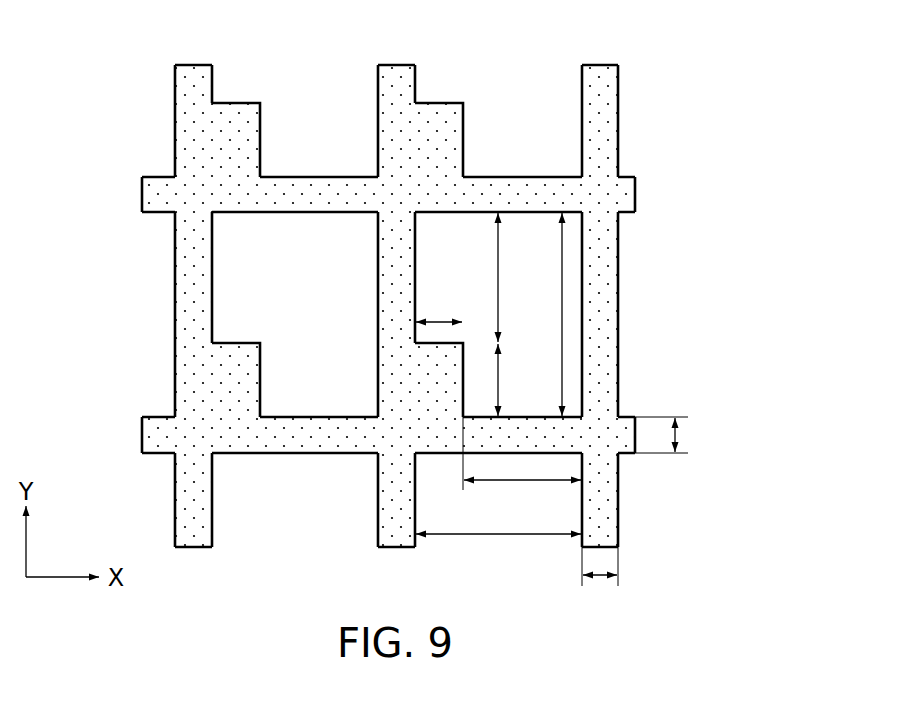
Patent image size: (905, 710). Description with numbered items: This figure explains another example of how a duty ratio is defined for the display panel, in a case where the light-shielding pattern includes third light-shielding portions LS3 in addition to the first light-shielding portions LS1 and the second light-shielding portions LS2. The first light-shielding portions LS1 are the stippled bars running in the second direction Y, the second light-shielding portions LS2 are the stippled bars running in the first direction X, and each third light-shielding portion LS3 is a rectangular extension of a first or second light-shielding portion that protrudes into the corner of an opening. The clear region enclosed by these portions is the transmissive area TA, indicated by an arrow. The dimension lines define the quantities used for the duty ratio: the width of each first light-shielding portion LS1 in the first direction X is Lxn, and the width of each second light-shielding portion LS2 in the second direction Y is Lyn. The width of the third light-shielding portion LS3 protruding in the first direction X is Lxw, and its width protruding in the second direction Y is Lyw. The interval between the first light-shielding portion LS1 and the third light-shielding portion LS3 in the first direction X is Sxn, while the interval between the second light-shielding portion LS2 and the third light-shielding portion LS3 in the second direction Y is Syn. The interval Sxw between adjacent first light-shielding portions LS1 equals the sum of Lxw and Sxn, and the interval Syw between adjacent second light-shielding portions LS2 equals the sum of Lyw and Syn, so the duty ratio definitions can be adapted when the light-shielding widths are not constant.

The first light-shielding portion LS1 is at (204, 237).
The second light-shielding portion LS2 is at (316, 185).
The third light-shielding portion LS3 is at (244, 118).
The transmissive area (aperture) TA is at (527, 232).
The interval Syn is at (500, 275).
The interval Syw is at (562, 305).
The width Lyw is at (501, 381).
The width Lxw is at (438, 322).
The width Lyn is at (678, 435).
The interval Sxn is at (526, 488).
The interval Sxw is at (495, 537).
The width Lxn is at (598, 590).